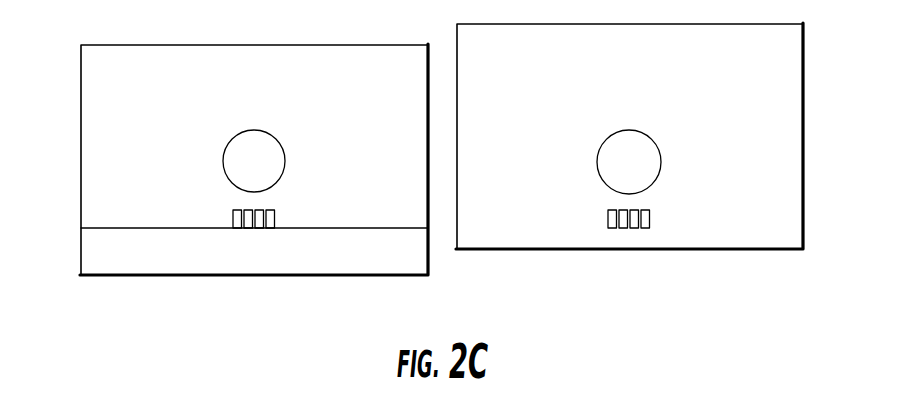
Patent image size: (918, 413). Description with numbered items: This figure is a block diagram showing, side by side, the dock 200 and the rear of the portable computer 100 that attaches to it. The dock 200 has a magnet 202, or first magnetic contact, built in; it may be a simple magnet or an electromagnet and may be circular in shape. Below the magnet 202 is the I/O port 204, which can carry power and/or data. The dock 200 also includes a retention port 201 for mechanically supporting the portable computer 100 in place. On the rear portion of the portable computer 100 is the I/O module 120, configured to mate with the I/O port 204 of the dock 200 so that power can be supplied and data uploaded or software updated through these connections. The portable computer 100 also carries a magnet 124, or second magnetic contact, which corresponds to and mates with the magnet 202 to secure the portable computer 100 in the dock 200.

The portable computer 100 is at (710, 250).
The I/O module 120 is at (602, 236).
The magnet 124 is at (605, 134).
The dock 200 is at (81, 168).
The retention port 201 is at (81, 248).
The magnet 202 is at (230, 131).
The I/O port 204 is at (261, 235).